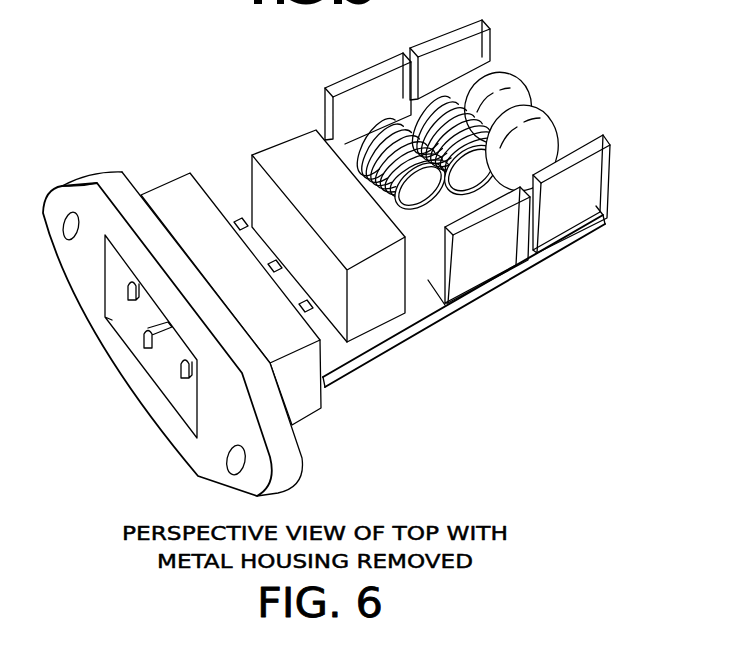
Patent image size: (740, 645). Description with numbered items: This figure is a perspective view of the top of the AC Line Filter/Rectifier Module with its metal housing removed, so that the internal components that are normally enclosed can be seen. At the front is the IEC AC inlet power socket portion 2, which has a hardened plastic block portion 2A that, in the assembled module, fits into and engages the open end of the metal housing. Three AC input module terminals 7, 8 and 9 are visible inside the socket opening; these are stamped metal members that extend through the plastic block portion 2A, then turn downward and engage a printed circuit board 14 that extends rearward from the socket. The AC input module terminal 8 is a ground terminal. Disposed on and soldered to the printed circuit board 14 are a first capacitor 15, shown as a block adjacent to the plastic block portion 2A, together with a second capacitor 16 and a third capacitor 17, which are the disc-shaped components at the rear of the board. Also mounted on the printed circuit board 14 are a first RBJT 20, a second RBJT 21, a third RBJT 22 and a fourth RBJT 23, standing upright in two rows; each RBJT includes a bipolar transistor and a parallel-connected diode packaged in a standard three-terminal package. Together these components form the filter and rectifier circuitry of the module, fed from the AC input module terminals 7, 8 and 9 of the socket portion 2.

The AC inlet power socket portion 2 is at (116, 172).
The plastic block portion 2A is at (216, 269).
The AC input module terminal 7 is at (121, 288).
The AC input module terminal 8 is at (139, 342).
The AC input module terminal 9 is at (175, 372).
The printed circuit board 14 is at (400, 349).
The first capacitor 15 is at (324, 212).
The second capacitor 16 is at (522, 74).
The third capacitor 17 is at (547, 111).
The first RBJT 20 is at (349, 75).
The second RBJT 21 is at (483, 250).
The third RBJT 22 is at (441, 32).
The fourth RBJT 23 is at (563, 200).